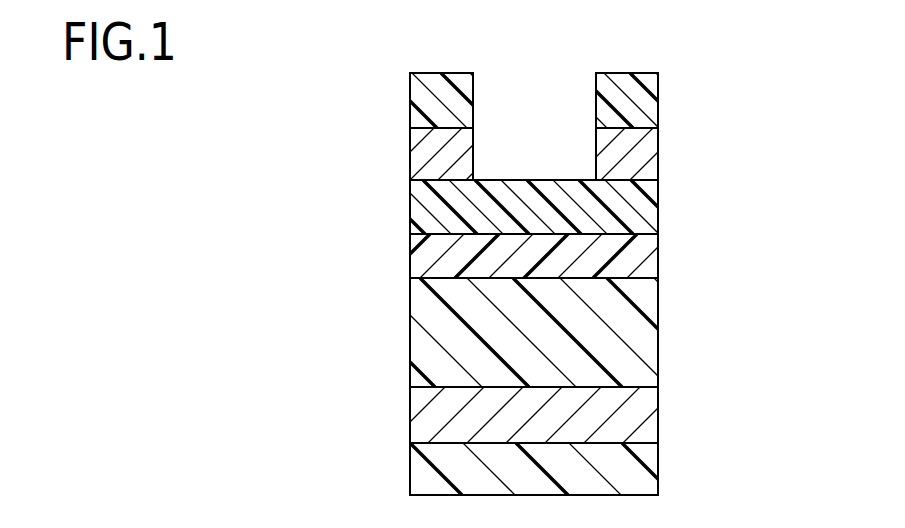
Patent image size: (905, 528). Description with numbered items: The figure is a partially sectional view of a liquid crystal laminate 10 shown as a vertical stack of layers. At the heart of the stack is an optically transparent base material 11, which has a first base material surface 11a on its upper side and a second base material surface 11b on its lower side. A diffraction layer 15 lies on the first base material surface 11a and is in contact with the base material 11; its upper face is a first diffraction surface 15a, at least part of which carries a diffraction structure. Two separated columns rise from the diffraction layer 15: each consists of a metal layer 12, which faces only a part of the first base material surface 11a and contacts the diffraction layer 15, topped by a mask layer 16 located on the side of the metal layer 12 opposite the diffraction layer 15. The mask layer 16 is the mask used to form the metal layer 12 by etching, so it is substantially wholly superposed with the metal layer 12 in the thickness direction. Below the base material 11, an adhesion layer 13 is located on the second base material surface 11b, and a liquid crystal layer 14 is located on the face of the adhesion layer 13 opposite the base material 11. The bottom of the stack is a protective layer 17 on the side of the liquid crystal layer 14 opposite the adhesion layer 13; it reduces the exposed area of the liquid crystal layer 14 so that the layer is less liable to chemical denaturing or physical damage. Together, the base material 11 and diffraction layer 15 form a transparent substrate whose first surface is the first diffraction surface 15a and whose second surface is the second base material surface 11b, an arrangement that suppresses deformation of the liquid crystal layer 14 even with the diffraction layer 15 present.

The liquid crystal laminate 10 is at (733, 69).
The base material 11 is at (658, 260).
The first base material surface 11a is at (428, 234).
The second base material surface 11b is at (426, 278).
The metal layer 12 is at (658, 157).
The adhesion layer 13 is at (658, 325).
The liquid crystal layer 14 is at (658, 423).
The diffraction layer 15 is at (658, 207).
The first diffraction surface 15a is at (427, 180).
The mask layer 16 is at (658, 108).
The protective layer 17 is at (658, 465).